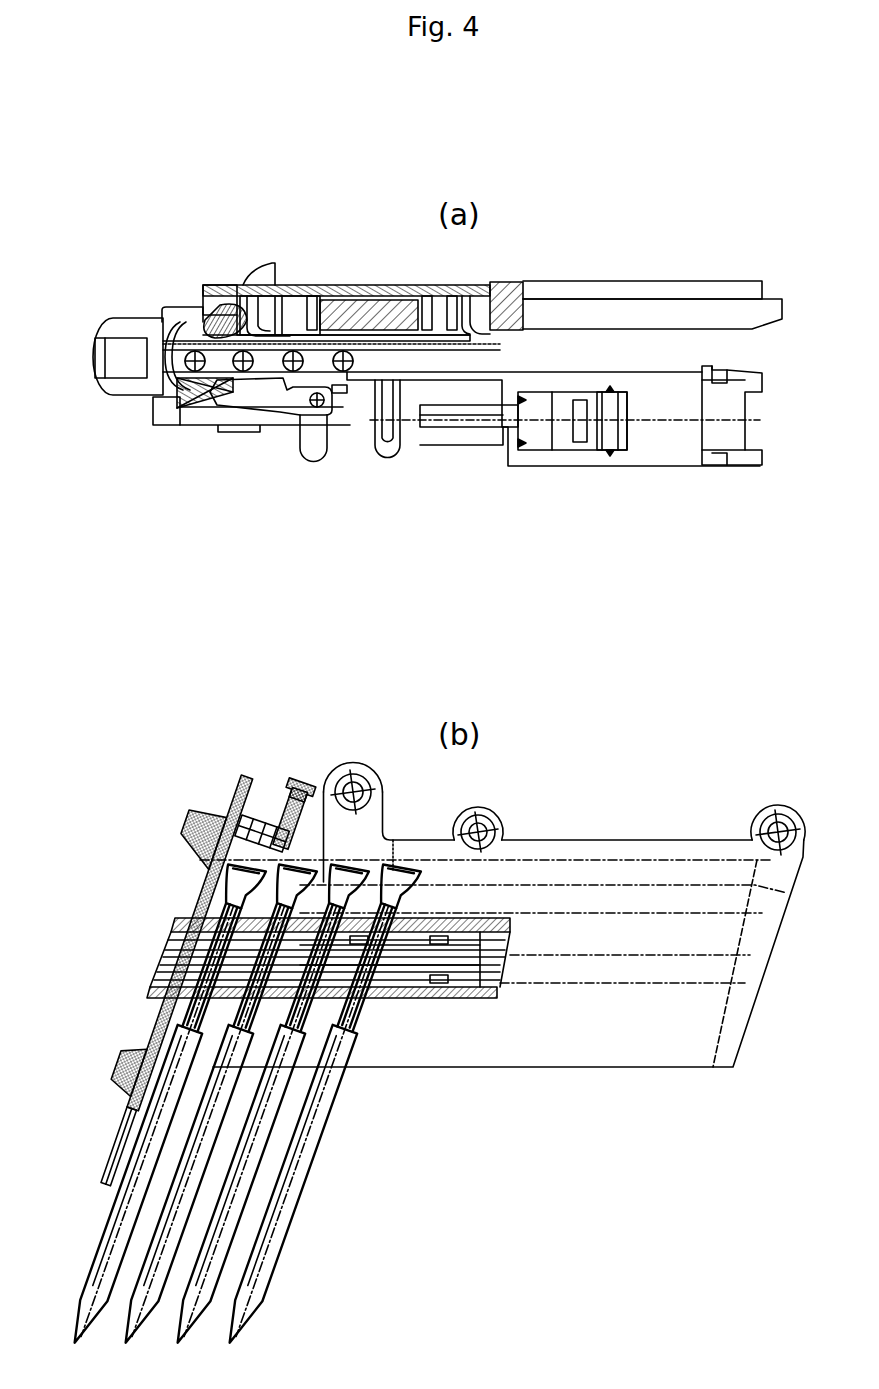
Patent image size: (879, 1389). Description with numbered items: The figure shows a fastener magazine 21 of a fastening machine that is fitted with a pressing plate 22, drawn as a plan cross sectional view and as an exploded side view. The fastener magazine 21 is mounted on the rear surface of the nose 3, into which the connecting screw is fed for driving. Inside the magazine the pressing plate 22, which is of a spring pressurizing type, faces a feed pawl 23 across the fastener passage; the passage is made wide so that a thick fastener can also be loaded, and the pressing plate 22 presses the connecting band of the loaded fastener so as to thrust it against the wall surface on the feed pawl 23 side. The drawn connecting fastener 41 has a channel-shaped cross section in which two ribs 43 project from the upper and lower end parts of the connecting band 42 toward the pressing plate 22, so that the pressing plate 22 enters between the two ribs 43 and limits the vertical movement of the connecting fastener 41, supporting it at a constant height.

The nose 3 is at (133, 318).
The fastener magazine 21 is at (623, 281).
The pressing plate 22 is at (428, 332).
The feed pawl 23 is at (232, 413).
The connecting fastener 41 is at (351, 410).
The connecting band 42 is at (180, 958).
The rib 43 is at (176, 918).